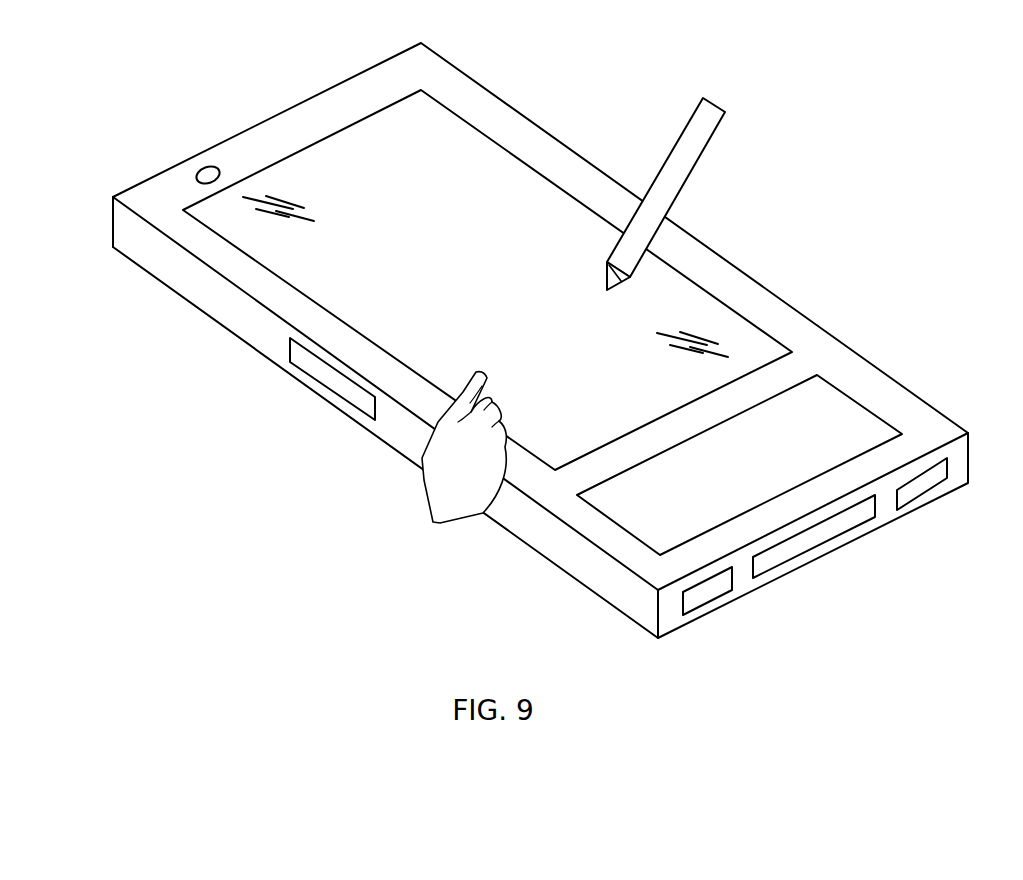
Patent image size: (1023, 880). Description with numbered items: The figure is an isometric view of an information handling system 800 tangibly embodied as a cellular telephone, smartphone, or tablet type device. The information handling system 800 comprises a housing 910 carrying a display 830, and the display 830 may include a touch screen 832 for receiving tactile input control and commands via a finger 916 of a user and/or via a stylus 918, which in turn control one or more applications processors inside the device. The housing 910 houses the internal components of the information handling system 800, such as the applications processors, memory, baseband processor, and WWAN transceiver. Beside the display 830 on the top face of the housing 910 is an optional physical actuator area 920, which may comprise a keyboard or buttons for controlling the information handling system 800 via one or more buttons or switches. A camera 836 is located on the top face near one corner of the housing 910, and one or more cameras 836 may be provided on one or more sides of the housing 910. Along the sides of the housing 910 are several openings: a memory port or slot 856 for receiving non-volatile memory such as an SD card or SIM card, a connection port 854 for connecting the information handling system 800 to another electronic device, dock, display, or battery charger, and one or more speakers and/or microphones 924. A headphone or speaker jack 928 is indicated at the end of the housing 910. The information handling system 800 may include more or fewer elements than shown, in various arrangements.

The information handling system 800 is at (556, 72).
The housing 910 is at (362, 70).
The headphone or speaker jack 928 is at (140, 183).
The display 830 is at (395, 155).
The touch screen 832 is at (517, 288).
The camera 836 is at (202, 165).
The physical actuator area 920 is at (827, 425).
The memory port or slot 856 is at (310, 377).
The connection port 854 is at (832, 542).
The speakers and/or microphones 924 is at (927, 495).
The stylus 918 is at (688, 132).
The finger 916 is at (478, 373).